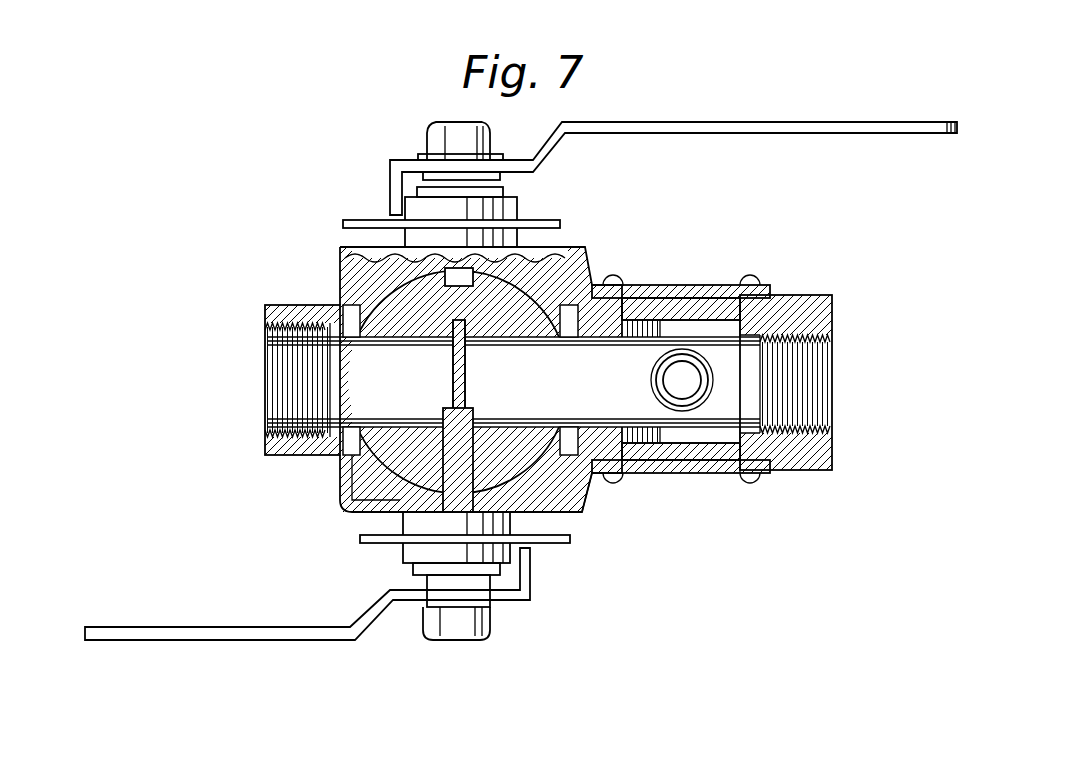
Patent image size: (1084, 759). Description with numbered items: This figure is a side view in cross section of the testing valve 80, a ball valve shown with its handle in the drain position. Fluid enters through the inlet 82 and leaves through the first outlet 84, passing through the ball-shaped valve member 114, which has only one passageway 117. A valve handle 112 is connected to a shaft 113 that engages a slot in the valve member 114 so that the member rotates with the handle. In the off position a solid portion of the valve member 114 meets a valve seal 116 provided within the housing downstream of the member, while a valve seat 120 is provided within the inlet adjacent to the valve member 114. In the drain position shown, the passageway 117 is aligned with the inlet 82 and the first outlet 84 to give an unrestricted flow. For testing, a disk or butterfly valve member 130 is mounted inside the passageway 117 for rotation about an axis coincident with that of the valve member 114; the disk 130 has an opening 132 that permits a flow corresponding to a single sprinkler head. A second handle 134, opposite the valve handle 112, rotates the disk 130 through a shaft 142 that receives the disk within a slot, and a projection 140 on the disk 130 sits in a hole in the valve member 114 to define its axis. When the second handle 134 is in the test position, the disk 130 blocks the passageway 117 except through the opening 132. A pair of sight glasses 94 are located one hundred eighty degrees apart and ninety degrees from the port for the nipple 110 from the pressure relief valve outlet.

The valve 80 is at (583, 248).
The inlet 82 is at (270, 462).
The first outlet 84 is at (800, 473).
The sight glasses 94 is at (690, 287).
The nipple 110 is at (832, 381).
The valve handle 112 is at (800, 135).
The shaft 113 is at (500, 265).
The valve member 114 is at (577, 500).
The valve seal 116 is at (592, 482).
The passageway 117 is at (333, 503).
The valve seat 120 is at (330, 300).
The disk valve member 130 is at (467, 352).
The opening 132 is at (467, 380).
The second handle 134 is at (295, 642).
The projection 140 is at (432, 337).
The shaft 142 is at (505, 515).